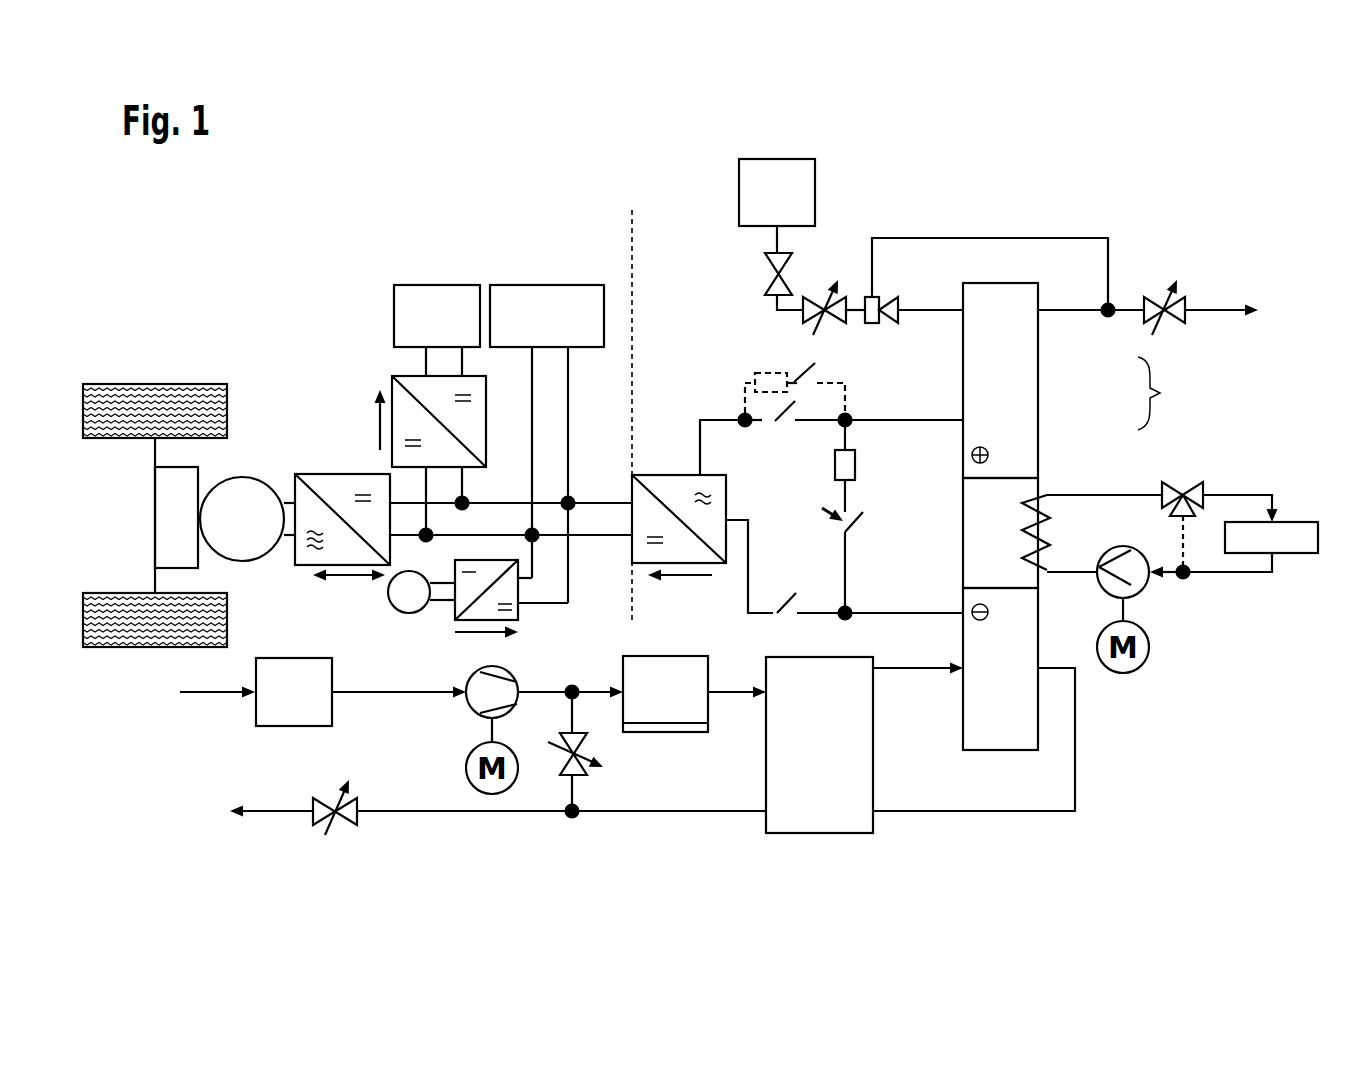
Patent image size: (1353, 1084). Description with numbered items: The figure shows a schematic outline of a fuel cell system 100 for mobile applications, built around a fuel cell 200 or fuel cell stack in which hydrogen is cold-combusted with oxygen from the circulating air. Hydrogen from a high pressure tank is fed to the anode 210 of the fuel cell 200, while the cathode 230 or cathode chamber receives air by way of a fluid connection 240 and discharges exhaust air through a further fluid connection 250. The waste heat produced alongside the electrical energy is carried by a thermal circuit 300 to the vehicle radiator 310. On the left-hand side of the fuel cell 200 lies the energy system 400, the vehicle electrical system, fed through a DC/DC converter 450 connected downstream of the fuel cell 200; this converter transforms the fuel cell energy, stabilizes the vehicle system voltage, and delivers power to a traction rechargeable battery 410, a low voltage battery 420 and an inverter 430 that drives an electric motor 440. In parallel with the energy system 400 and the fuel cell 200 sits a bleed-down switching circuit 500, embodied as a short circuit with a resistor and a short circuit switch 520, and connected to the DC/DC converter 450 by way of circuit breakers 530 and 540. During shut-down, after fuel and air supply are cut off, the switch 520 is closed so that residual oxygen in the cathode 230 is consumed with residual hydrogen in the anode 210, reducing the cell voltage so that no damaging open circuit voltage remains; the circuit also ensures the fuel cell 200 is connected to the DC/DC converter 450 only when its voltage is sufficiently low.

The fuel cell system 100 is at (1120, 195).
The fuel cell 200 is at (1086, 472).
The anode 210 is at (1038, 383).
The cathode 230 is at (1038, 633).
The fluid connection 240 is at (905, 670).
The further fluid connection 250 is at (1013, 813).
The thermal circuit 300 is at (1120, 495).
The vehicle radiator 310 is at (1295, 555).
The energy system 400 is at (492, 222).
The traction rechargeable battery 410 is at (550, 284).
The low voltage battery 420 is at (439, 284).
The inverter 430 is at (335, 473).
The electric motor 440 is at (255, 477).
The DC/DC converter 450 is at (670, 474).
The bleed-down switching circuit 500 is at (855, 465).
The switch 520 is at (866, 522).
The circuit breaker 530 is at (782, 410).
The circuit breaker 540 is at (786, 598).